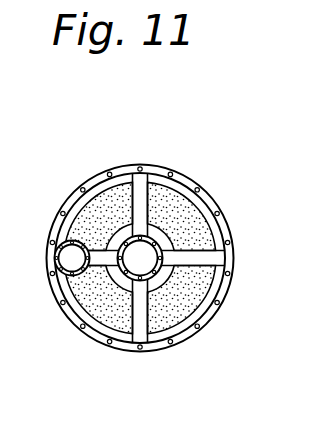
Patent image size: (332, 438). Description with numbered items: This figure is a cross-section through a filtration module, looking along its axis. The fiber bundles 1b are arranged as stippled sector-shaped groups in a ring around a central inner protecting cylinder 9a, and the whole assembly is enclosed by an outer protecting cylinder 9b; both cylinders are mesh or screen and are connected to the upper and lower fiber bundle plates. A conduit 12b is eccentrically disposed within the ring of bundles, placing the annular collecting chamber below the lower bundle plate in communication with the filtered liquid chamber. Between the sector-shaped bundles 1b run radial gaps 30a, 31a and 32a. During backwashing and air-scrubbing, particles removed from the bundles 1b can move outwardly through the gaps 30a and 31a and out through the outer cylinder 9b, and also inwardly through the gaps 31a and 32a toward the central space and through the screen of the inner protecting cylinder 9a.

The fiber bundles 1b is at (176, 197).
The conduit 12b is at (60, 240).
The gap 30a is at (200, 258).
The gap 32a is at (127, 285).
The inner protecting cylinder 9a is at (125, 287).
The outer protecting cylinder 9b is at (192, 330).
The gap 31a is at (207, 302).